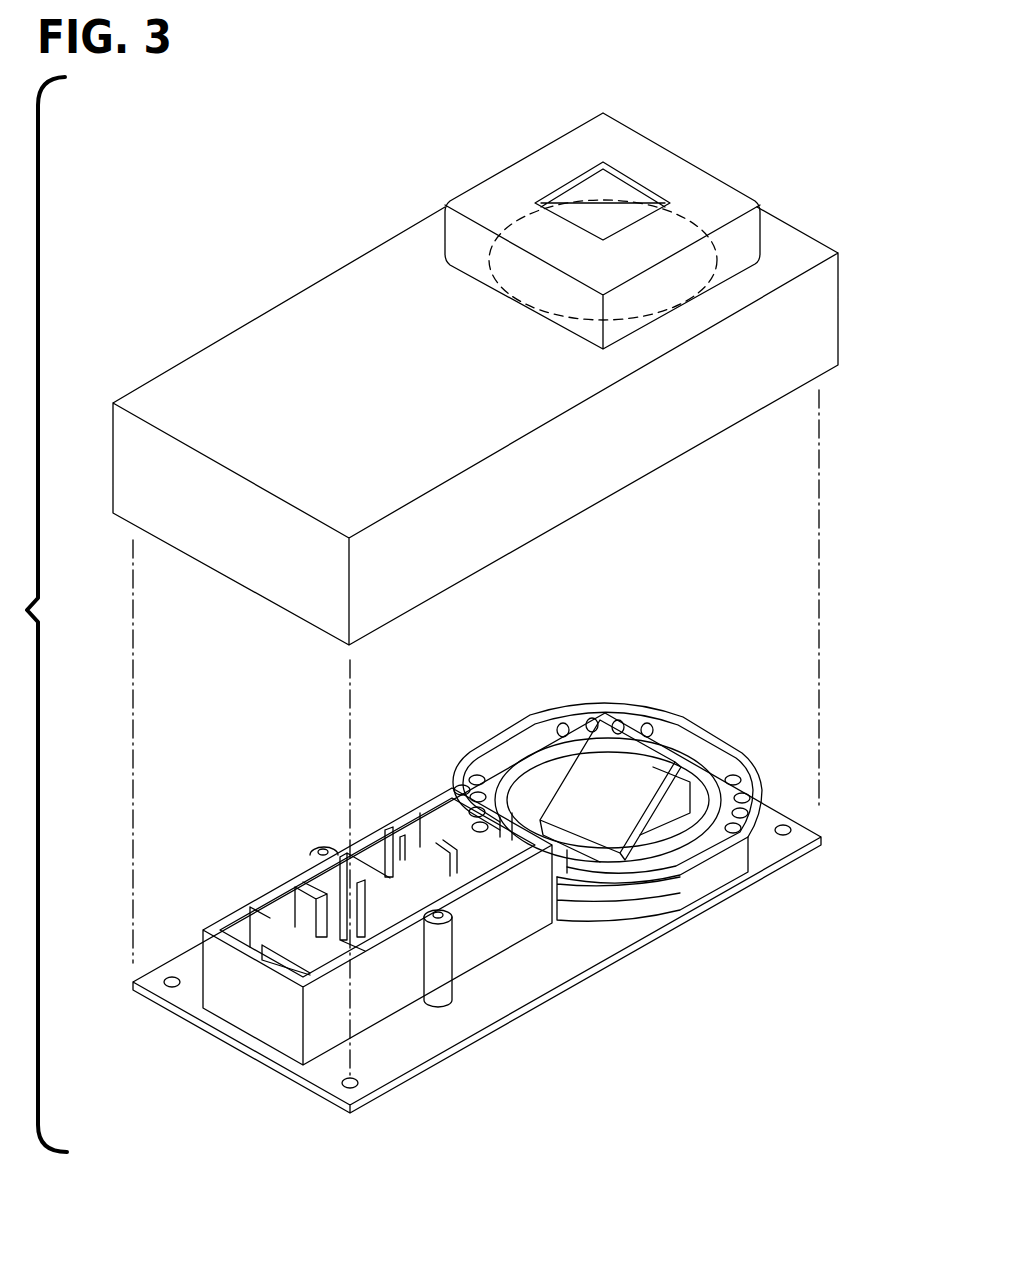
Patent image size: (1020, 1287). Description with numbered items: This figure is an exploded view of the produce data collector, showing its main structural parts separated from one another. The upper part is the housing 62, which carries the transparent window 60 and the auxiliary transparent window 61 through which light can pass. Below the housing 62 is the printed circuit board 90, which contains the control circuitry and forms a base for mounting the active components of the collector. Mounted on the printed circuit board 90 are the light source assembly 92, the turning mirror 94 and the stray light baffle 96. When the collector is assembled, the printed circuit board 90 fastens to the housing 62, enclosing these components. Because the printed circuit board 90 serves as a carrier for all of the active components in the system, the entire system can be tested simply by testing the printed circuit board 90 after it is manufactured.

The transparent window 60 is at (588, 170).
The auxiliary transparent window 61 is at (610, 190).
The housing 62 is at (838, 310).
The printed circuit board 90 is at (572, 978).
The light source assembly 92 is at (752, 758).
The turning mirror 94 is at (630, 760).
The stray light baffle 96 is at (247, 1017).